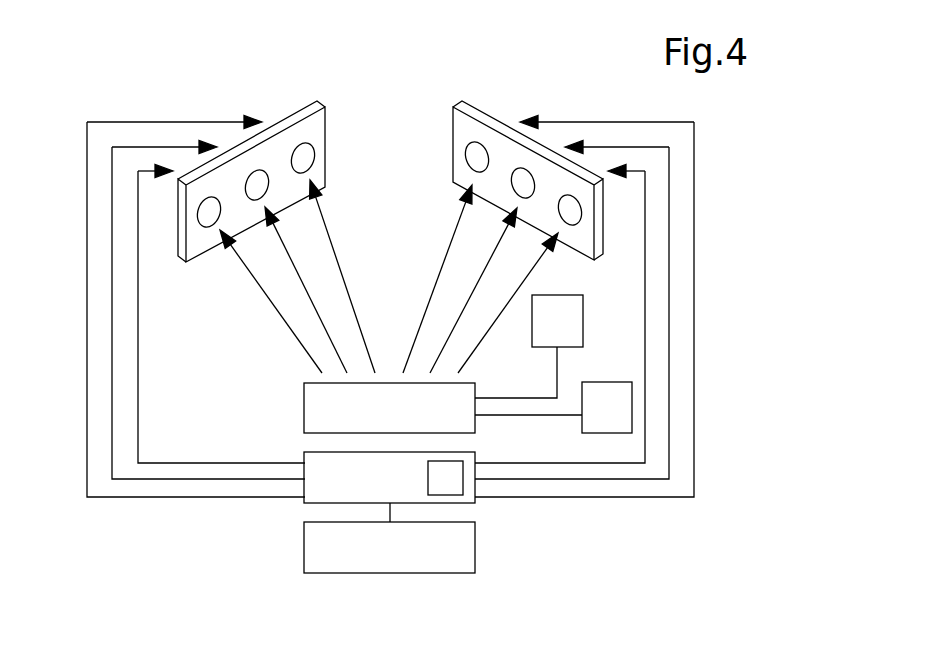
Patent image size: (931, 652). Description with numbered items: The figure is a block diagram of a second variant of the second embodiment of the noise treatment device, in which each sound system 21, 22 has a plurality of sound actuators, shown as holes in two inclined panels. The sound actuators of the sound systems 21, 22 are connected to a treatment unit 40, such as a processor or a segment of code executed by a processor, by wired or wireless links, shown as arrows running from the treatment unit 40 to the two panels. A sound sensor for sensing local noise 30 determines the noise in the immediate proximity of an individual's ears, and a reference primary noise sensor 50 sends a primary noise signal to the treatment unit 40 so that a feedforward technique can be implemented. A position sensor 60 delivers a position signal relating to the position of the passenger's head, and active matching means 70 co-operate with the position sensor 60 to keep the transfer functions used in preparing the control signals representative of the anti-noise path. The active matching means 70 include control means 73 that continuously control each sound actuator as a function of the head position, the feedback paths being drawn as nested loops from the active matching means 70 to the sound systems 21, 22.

The sound system 21 is at (273, 97).
The sound system 22 is at (497, 97).
The sound sensor for sensing local noise 30 is at (543, 335).
The treatment unit 40 is at (375, 419).
The reference primary noise sensor 50 is at (593, 421).
The position sensor 60 is at (375, 560).
The active matching means 70 is at (375, 489).
The control means 73 is at (450, 478).